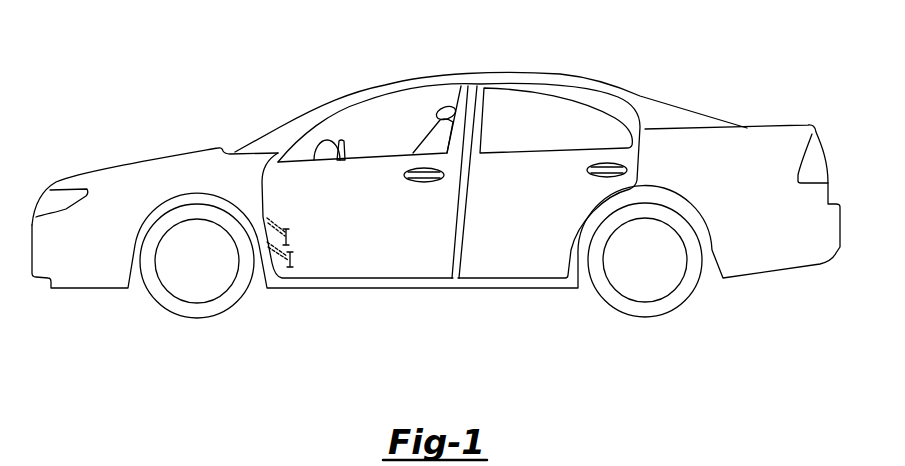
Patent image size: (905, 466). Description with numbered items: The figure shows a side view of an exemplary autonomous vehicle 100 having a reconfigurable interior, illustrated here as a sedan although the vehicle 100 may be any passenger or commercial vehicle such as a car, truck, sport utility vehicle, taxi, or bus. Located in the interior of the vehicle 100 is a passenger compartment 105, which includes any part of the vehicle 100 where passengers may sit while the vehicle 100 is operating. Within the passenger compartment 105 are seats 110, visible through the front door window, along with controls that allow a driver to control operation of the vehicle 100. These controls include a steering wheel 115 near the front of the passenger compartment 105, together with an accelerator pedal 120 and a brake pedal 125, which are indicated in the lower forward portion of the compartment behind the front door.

The vehicle 100 is at (556, 73).
The passenger compartment 105 is at (375, 124).
The seats 110 is at (453, 97).
The steering wheel 115 is at (339, 142).
The accelerator pedal 120 is at (292, 232).
The brake pedal 125 is at (296, 258).